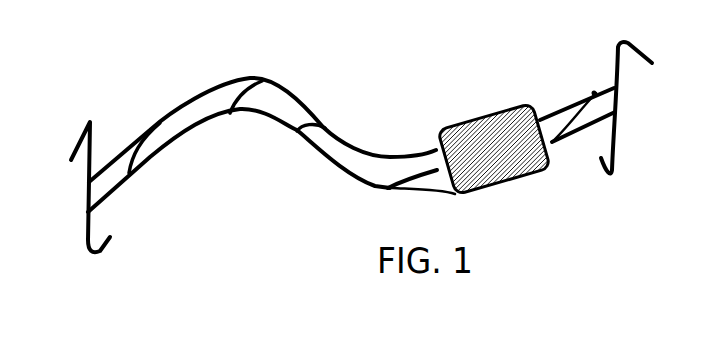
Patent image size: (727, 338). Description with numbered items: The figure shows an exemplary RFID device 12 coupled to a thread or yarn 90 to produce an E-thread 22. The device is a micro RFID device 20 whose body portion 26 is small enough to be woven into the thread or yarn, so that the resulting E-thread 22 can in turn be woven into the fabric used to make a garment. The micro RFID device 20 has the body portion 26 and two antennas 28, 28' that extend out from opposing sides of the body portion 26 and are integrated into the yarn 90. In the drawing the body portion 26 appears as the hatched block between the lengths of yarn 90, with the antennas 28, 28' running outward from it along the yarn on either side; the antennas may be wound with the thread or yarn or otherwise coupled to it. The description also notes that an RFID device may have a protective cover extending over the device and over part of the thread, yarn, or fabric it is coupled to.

The RFID device 12 is at (497, 104).
The micro RFID device 20 is at (467, 143).
The E-thread 22 is at (180, 116).
The body portion 26 is at (487, 133).
The antenna 28 is at (351, 106).
The antenna 28' is at (582, 71).
The yarn 90 is at (350, 163).